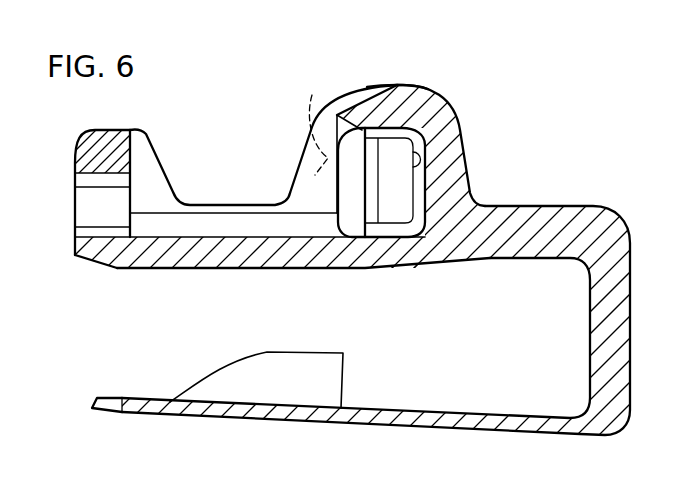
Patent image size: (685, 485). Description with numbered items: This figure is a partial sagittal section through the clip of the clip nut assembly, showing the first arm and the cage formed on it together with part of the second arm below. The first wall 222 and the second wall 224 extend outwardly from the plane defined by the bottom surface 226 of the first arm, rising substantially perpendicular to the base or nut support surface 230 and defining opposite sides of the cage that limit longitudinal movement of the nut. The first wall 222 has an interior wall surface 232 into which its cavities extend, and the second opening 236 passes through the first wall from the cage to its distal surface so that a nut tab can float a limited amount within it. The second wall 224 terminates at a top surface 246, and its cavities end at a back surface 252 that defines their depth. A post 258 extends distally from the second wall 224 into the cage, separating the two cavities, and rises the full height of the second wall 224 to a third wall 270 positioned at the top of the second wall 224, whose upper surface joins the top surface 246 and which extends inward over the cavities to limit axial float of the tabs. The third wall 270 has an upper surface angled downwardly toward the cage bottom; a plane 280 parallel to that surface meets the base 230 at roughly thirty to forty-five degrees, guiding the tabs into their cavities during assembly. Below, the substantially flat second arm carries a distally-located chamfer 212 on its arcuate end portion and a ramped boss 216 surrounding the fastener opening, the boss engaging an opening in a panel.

The chamfer 212 is at (115, 400).
The ramped boss 216 is at (343, 372).
The first wall 222 is at (102, 134).
The second wall 224 is at (440, 120).
The bottom surface 226 is at (273, 264).
The nut support surface 230 is at (182, 233).
The interior wall surface 232 is at (130, 153).
The second opening 236 is at (69, 212).
The top surface 246 is at (433, 90).
The back surface 252 is at (425, 147).
The post 258 is at (415, 192).
The third wall 270 is at (436, 52).
The plane 280 is at (327, 122).